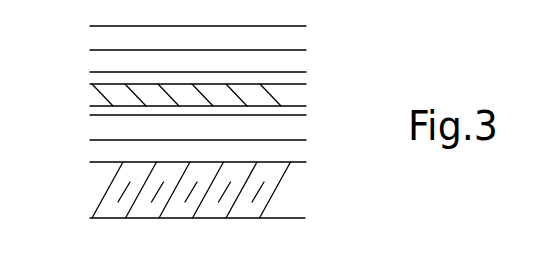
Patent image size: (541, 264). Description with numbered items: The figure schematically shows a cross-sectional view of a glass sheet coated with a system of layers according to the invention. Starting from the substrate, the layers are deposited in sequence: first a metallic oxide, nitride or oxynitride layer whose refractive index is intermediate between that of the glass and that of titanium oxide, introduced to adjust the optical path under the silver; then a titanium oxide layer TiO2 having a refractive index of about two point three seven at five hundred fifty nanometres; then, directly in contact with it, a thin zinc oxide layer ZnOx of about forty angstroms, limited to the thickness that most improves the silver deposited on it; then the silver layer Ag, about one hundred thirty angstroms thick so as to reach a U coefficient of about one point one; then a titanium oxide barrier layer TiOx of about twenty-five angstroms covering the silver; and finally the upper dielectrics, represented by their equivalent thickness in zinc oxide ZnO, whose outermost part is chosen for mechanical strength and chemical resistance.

The zinc oxide equivalent layer ZnO is at (285, 65).
The titanium oxide barrier layer TiOx is at (118, 79).
The silver layer Ag is at (295, 85).
The zinc oxide layer ZnOx is at (113, 114).
The titanium oxide layer TiO2 is at (287, 131).